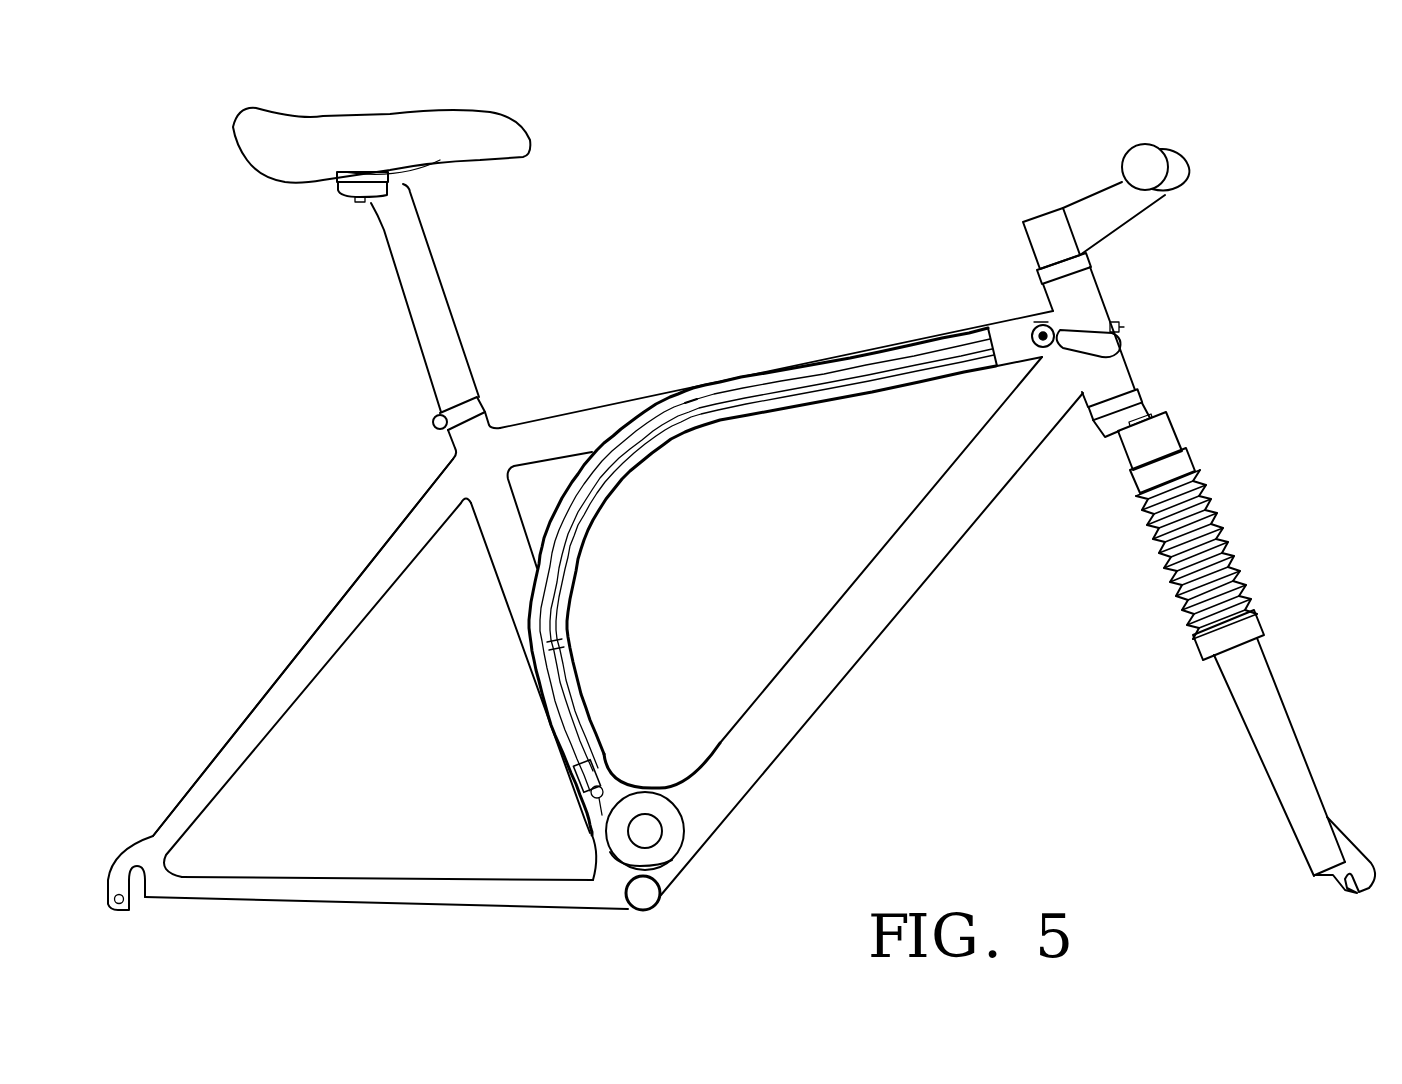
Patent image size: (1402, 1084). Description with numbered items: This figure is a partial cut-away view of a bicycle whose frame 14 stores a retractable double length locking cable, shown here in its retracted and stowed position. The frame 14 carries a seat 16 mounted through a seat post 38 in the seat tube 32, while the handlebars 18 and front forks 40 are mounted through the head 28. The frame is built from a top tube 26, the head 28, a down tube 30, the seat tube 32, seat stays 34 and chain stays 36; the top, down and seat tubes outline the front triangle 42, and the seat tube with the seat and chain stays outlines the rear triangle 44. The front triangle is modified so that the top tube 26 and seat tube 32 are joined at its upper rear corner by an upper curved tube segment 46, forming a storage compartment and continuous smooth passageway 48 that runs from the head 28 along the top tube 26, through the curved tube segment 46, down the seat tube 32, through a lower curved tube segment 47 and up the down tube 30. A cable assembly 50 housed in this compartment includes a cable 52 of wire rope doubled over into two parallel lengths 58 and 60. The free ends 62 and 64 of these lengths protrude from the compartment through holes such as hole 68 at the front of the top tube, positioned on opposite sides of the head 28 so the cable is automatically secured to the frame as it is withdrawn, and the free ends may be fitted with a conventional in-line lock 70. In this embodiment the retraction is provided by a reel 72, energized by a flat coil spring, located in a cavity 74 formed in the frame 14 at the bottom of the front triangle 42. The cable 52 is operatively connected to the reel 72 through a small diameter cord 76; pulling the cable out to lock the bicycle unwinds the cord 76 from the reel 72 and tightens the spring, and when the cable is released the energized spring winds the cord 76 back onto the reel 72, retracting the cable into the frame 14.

The frame 14 is at (312, 452).
The seat 16 is at (359, 125).
The handlebars 18 is at (1185, 180).
The top tube 26 is at (556, 422).
The head 28 is at (1095, 286).
The down tube 30 is at (857, 653).
The seat tube 32 is at (503, 592).
The seat stays 34 is at (324, 628).
The chain stays 36 is at (420, 890).
The seat post 38 is at (440, 283).
The front forks 40 is at (1262, 760).
The front triangle 42 is at (857, 542).
The rear triangle 44 is at (292, 740).
The upper curved tube segment 46 is at (562, 486).
The lower curved tube segment 47 is at (682, 776).
The storage compartment and continuous smooth passageway 48 is at (806, 406).
The cable assembly 50 is at (718, 449).
The cable 52 is at (560, 646).
The cable length 58 is at (860, 356).
The cable length 60 is at (908, 372).
The free end 62 is at (1123, 325).
The free end 64 is at (1052, 348).
The hole 68 is at (1040, 320).
The in-line lock 70 is at (1125, 349).
The reel 72 is at (638, 792).
The cavity 74 is at (693, 828).
The cord 76 is at (587, 828).